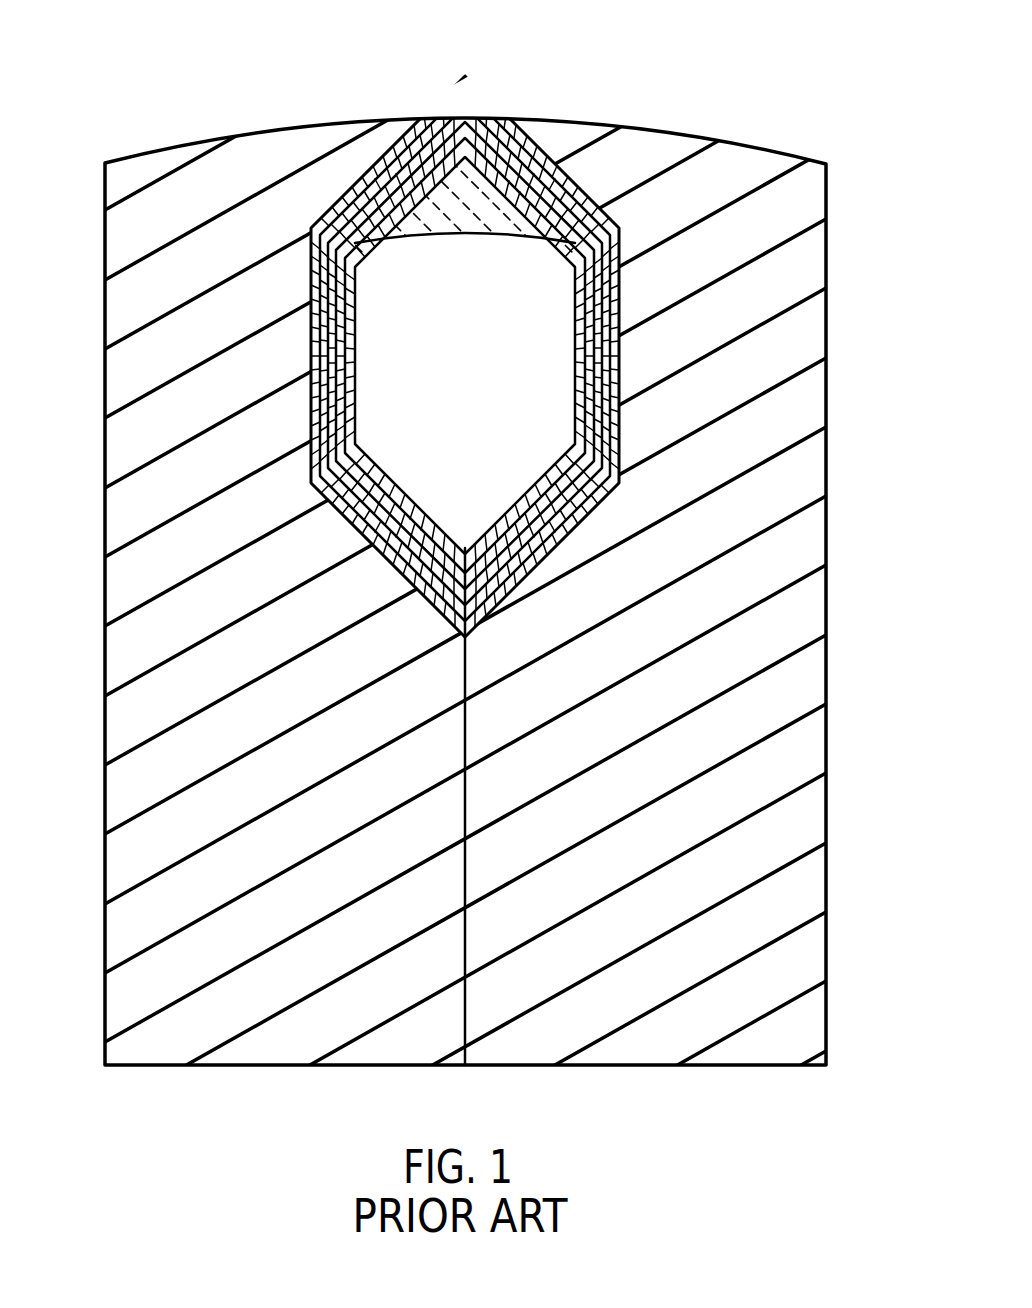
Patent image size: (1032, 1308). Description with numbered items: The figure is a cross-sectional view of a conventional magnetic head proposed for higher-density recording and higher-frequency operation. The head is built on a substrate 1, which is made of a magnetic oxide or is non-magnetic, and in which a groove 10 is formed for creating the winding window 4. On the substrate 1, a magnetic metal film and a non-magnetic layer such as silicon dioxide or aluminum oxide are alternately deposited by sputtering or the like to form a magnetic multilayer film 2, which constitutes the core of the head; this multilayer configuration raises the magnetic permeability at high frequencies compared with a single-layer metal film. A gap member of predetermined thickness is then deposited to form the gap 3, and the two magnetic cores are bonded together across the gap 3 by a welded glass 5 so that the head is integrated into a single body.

The substrate 1 is at (170, 208).
The magnetic multilayer film 2 is at (555, 163).
The gap 3 is at (465, 163).
The winding window 4 is at (430, 322).
The welded glass 5 is at (460, 213).
The groove for forming the winding window 10 is at (311, 392).